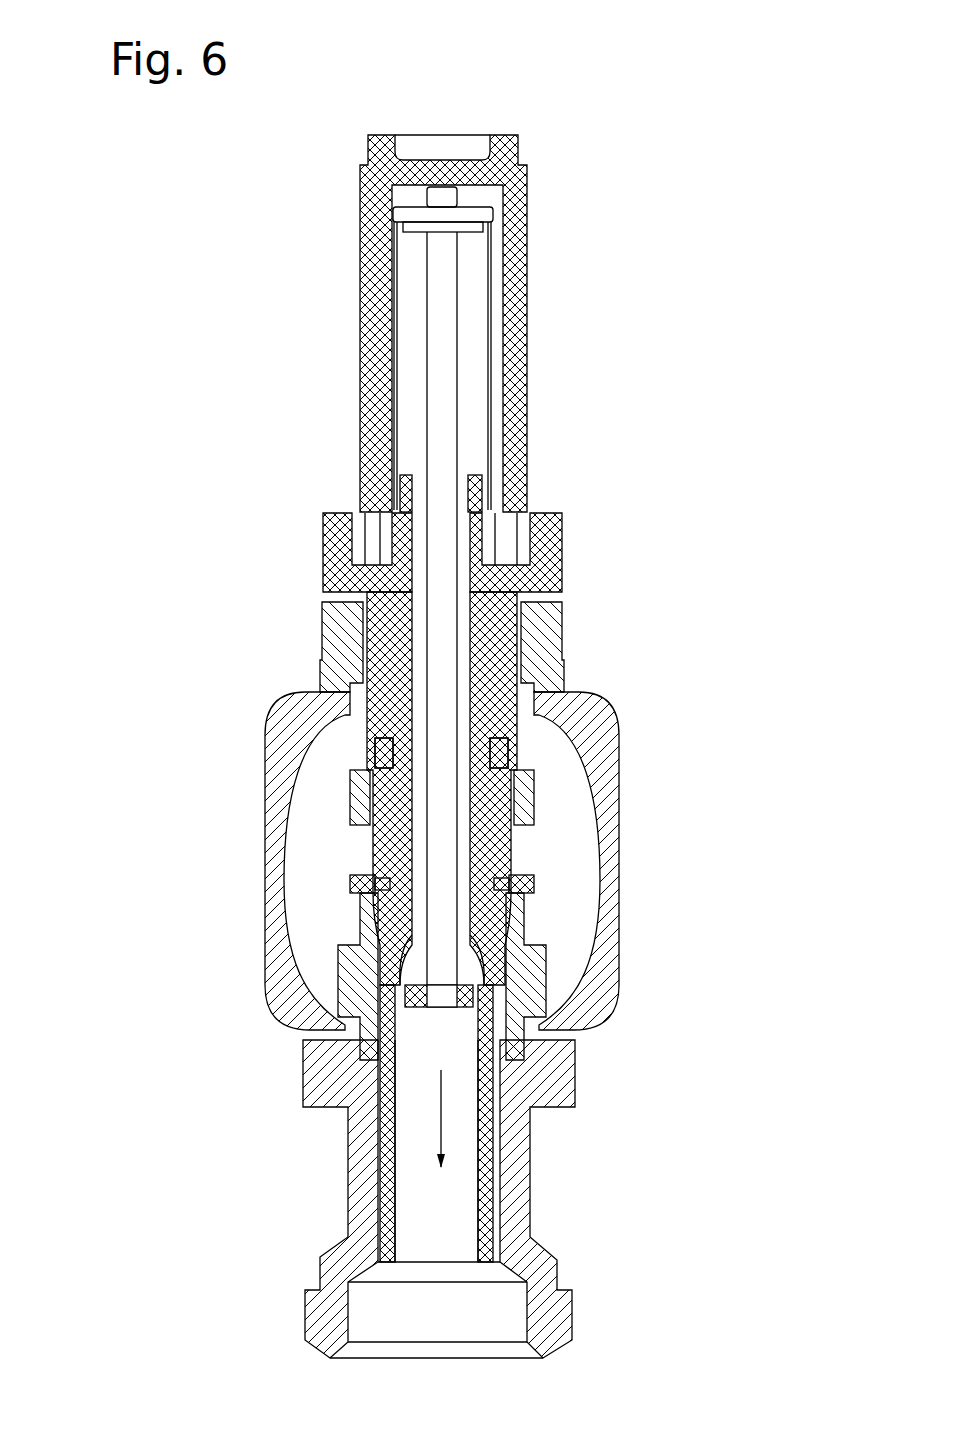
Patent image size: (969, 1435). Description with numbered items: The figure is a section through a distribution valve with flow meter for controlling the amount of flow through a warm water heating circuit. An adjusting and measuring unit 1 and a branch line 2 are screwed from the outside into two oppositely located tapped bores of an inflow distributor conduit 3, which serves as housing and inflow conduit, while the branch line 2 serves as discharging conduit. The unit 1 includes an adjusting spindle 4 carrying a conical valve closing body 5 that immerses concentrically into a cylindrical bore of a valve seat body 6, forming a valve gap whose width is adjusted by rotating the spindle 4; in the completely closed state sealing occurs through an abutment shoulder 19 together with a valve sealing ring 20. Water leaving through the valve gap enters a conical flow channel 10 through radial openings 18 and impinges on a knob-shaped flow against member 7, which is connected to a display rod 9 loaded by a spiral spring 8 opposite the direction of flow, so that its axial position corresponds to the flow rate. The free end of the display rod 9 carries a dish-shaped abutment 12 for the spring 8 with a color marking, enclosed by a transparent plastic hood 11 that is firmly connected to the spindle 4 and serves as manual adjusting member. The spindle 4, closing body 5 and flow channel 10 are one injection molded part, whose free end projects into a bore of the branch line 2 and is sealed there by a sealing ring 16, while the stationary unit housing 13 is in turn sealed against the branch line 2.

The adjusting and measuring unit 1 is at (233, 600).
The branch line 2 is at (358, 1152).
The inflow distributor conduit 3 is at (560, 717).
The adjusting spindle 4 is at (515, 640).
The valve closing body 5 is at (503, 910).
The valve seat body 6 is at (520, 930).
The flow against member 7 is at (463, 1000).
The spiral spring 8 is at (385, 325).
The display rod 9 is at (443, 307).
The flow channel 10 is at (460, 1238).
The transparent plastic hood 11 is at (515, 183).
The dish-shaped abutment 12 is at (423, 213).
The adjusting and measuring unit housing 13 is at (345, 635).
The sealing ring 16 is at (370, 1013).
The radial openings 18 is at (398, 959).
The abutment shoulder 19 is at (350, 878).
The valve sealing ring 20 is at (370, 887).